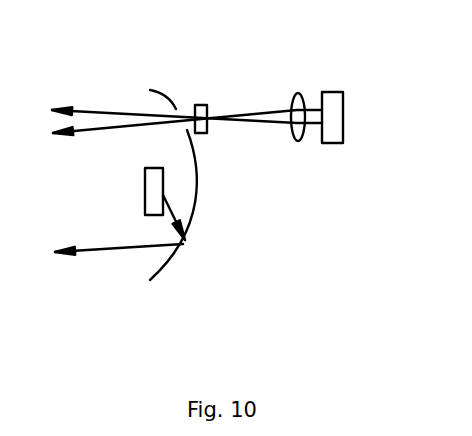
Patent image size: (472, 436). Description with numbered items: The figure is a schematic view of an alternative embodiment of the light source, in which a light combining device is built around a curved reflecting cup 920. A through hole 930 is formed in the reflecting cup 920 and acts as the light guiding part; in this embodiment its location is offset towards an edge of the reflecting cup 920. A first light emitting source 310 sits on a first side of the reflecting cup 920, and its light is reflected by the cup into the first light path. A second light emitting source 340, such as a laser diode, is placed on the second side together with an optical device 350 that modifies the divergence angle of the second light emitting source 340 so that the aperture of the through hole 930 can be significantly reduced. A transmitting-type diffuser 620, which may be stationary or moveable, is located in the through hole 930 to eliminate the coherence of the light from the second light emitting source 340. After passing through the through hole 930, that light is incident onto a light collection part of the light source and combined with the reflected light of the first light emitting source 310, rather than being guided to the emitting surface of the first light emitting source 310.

The through hole 930 is at (182, 101).
The transmitting-type diffuser 620 is at (207, 105).
The optical device 350 is at (298, 93).
The second light emitting source 340 is at (333, 145).
The first light emitting source 310 is at (145, 177).
The reflecting cup 920 is at (168, 276).